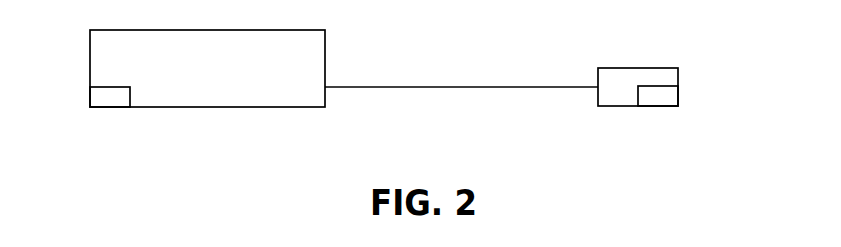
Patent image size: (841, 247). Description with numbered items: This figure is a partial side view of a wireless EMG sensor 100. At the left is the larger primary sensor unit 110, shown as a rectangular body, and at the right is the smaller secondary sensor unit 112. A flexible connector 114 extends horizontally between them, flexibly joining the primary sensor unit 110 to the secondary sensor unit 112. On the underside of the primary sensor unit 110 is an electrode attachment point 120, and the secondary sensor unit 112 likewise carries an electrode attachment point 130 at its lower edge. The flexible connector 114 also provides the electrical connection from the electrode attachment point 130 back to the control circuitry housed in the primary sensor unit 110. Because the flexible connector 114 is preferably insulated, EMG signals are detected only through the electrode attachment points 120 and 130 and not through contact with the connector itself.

The wireless EMG sensor 100 is at (392, 89).
The primary sensor unit 110 is at (318, 100).
The secondary sensor unit 112 is at (638, 68).
The flexible connector 114 is at (467, 87).
The electrode attachment point 120 is at (110, 107).
The electrode attachment point 130 is at (658, 106).